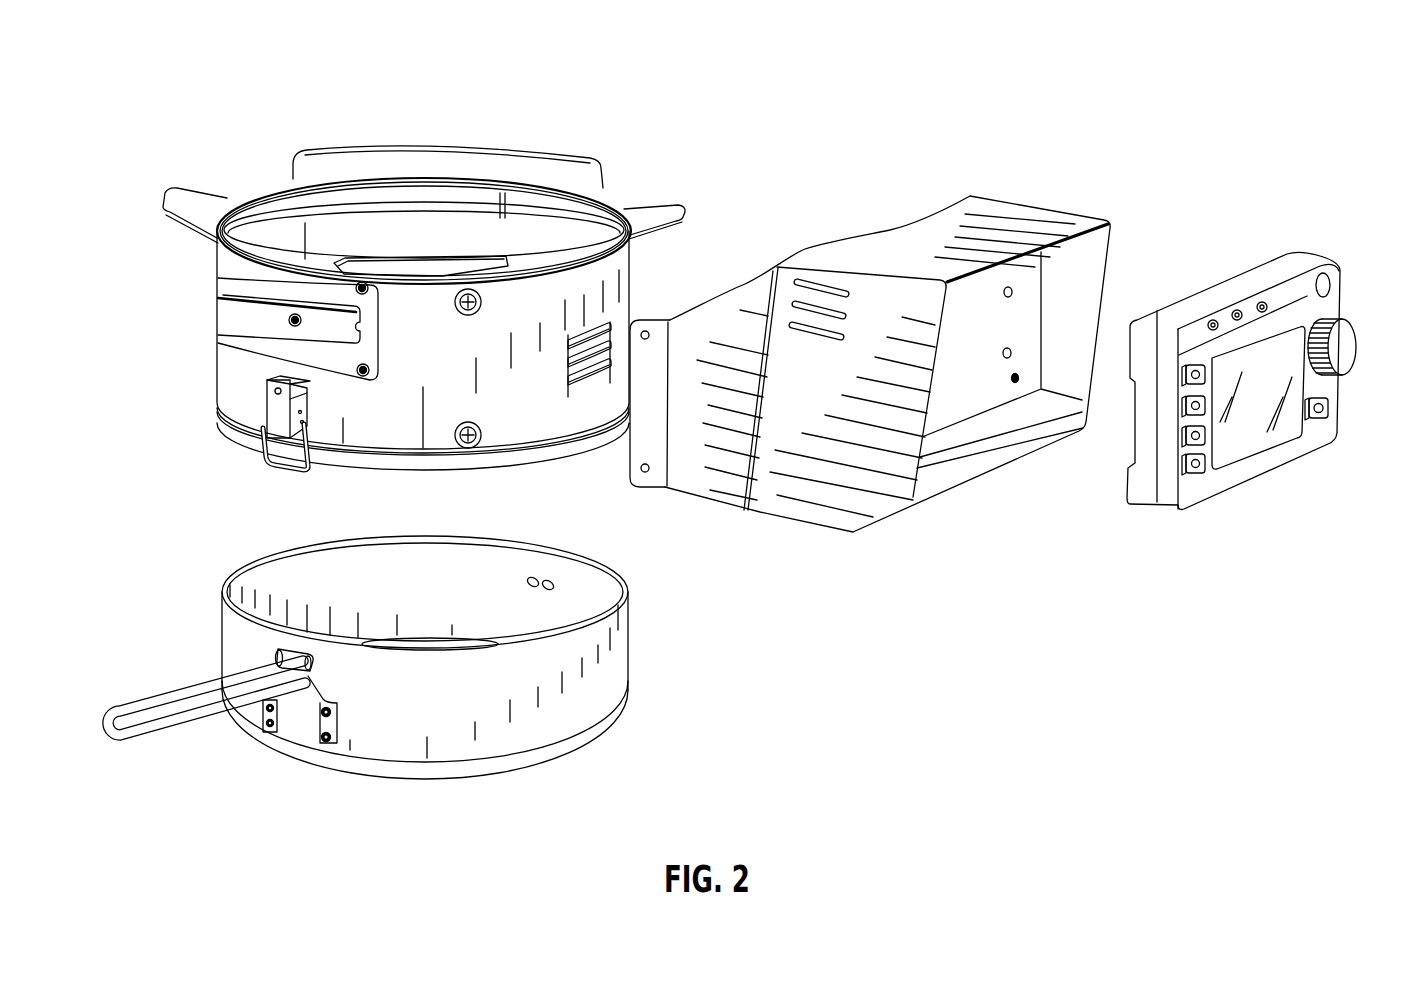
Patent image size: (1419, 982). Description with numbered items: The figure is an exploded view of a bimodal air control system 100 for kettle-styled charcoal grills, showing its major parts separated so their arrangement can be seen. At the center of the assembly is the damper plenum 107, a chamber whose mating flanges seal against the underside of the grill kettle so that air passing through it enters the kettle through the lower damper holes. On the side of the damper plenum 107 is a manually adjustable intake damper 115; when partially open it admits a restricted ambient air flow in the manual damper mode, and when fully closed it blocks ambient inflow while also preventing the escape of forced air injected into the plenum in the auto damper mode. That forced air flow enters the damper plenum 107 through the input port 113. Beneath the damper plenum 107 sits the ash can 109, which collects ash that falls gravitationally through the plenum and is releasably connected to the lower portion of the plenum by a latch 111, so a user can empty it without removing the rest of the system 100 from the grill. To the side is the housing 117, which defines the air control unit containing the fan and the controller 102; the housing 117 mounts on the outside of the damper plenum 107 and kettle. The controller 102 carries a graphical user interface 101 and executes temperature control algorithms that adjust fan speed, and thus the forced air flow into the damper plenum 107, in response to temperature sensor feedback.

The bimodal air control system 100 is at (1359, 129).
The graphical user interface 101 is at (1238, 438).
The controller 102 is at (1317, 433).
The damper plenum 107 is at (624, 289).
The ash can 109 is at (607, 662).
The latch 111 is at (278, 413).
The input port 113 is at (580, 390).
The intake damper 115 is at (232, 294).
The housing 117 is at (1000, 218).